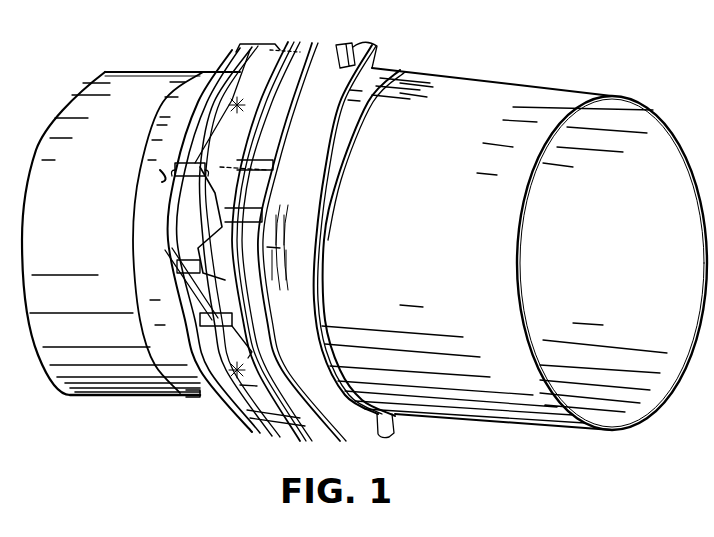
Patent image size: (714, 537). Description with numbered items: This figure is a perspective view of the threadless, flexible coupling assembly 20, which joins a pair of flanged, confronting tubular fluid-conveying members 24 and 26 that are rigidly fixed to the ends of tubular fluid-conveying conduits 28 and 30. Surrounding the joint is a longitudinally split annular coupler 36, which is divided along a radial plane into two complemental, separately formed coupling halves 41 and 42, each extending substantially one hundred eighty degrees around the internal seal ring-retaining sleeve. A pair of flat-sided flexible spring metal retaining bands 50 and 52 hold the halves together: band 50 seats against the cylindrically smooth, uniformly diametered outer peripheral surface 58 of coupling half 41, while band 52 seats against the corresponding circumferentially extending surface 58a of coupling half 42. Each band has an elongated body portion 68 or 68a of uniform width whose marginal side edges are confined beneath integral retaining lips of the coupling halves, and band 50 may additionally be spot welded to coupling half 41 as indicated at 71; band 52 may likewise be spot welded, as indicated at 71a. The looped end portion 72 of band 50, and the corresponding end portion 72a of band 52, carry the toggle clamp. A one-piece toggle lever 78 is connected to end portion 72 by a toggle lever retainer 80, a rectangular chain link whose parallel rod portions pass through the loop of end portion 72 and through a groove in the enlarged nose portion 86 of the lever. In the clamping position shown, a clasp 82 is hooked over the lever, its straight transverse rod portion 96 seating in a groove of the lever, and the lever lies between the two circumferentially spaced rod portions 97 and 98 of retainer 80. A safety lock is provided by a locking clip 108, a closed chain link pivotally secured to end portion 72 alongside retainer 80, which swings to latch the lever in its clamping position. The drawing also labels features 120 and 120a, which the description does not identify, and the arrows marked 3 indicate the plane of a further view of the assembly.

The coupling assembly 20 is at (452, 22).
The fluid-conveying member 24 is at (190, 88).
The fluid-conveying member 26 is at (382, 76).
The tubular fluid-conveying conduit 28 is at (110, 80).
The tubular fluid-conveying conduit 30 is at (530, 97).
The longitudinally split annular coupler 36 is at (378, 40).
The coupling half 41 is at (290, 104).
The coupling half 42 is at (257, 236).
The retaining band 50 is at (262, 62).
The retaining band 52 is at (258, 411).
The outer peripheral surface 58 is at (235, 195).
The circumferentially extending surface 58a is at (228, 286).
The body portion 68 is at (255, 97).
The body portion 68a is at (250, 365).
The spot weld 71 is at (230, 115).
The tab 71a is at (197, 397).
The end portion 72 is at (213, 125).
The clip 72a is at (200, 347).
The toggle lever 78 is at (165, 193).
The toggle lever retainer 80 is at (239, 199).
The clasp 82 is at (172, 283).
The enlarged nose portion 86 is at (225, 283).
The straight transverse rod portion 96 is at (247, 226).
The rod portion 97 is at (156, 166).
The rod portion 98 is at (223, 175).
The locking clip 108 is at (235, 153).
The band tab 120 is at (330, 42).
The band tab 120a is at (393, 433).
The section line 3- 3 is at (77, 232).